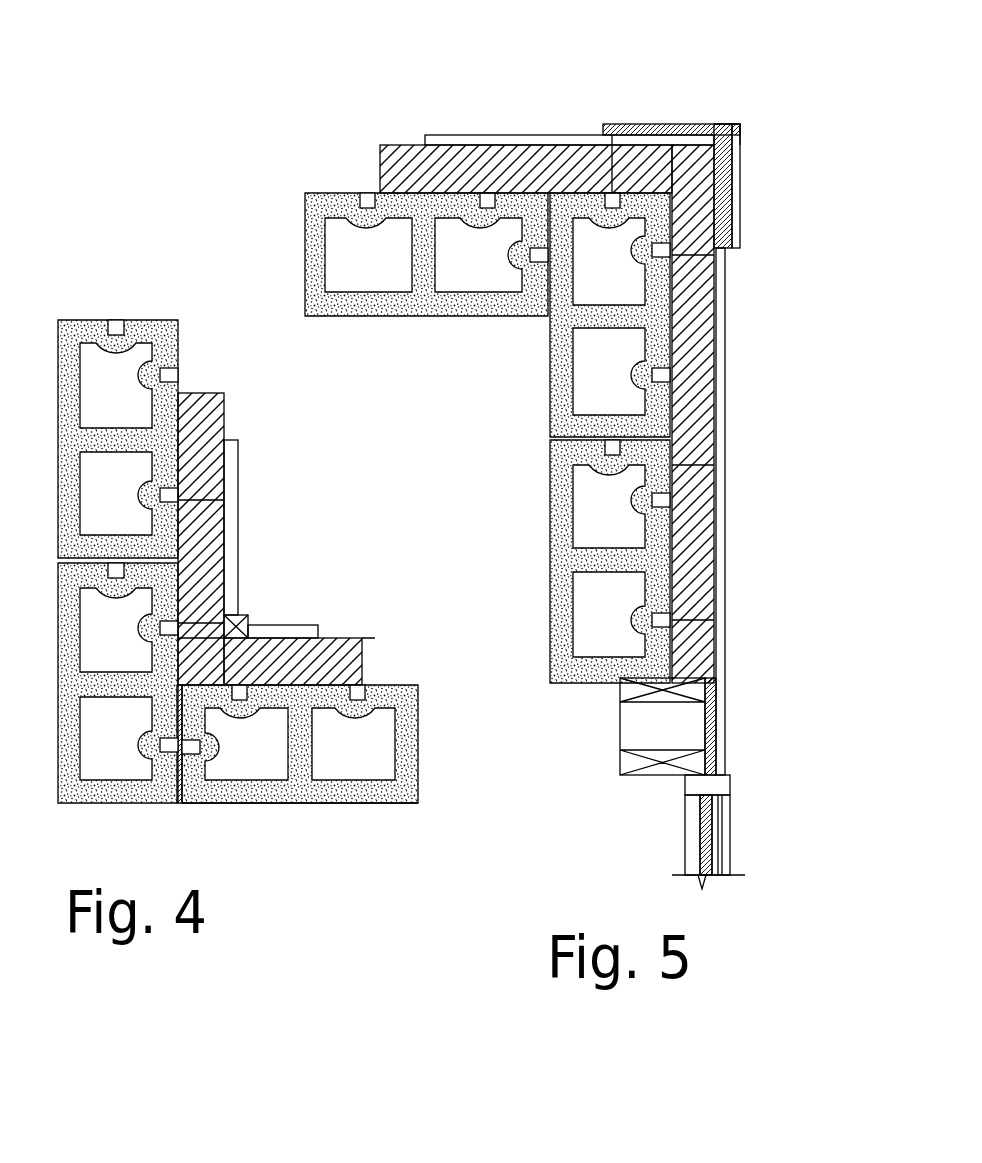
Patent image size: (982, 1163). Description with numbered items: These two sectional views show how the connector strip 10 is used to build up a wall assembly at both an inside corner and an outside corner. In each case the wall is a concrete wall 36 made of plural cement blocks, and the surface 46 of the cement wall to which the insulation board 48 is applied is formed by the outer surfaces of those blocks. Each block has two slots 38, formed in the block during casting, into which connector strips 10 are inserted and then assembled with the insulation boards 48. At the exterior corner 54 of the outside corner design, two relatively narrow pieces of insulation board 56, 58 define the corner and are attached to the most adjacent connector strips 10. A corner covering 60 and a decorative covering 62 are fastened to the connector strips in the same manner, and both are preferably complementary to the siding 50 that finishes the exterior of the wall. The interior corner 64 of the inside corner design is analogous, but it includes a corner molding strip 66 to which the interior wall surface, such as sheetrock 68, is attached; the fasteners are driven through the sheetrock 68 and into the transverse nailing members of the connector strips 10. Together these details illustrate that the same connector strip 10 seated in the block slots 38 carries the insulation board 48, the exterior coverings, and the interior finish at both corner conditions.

In FIG. 4, the connector strip 10 is at (358, 637).
In FIG. 5, the connector strip 10 is at (697, 263).
In FIG. 4, the concrete wall 36 is at (355, 803).
In FIG. 4, the slot 38 is at (178, 376).
In FIG. 5, the slot 38 is at (668, 366).
In FIG. 4, the surface of the cement wall 46 is at (181, 336).
In FIG. 5, the surface of the cement wall 46 is at (327, 192).
In FIG. 4, the insulation board 48 is at (225, 396).
In FIG. 5, the insulation board 48 is at (540, 165).
In FIG. 5, the siding 50 is at (474, 140).
In FIG. 5, the exterior corner 54 is at (739, 82).
In FIG. 5, the insulation board piece 56 is at (633, 165).
In FIG. 5, the insulation board piece 58 is at (722, 180).
In FIG. 5, the corner covering 60 is at (733, 128).
In FIG. 5, the decorative covering 62 is at (740, 222).
In FIG. 4, the interior corner 64 is at (301, 541).
In FIG. 4, the corner molding strip 66 is at (243, 618).
In FIG. 4, the sheetrock 68 is at (236, 472).